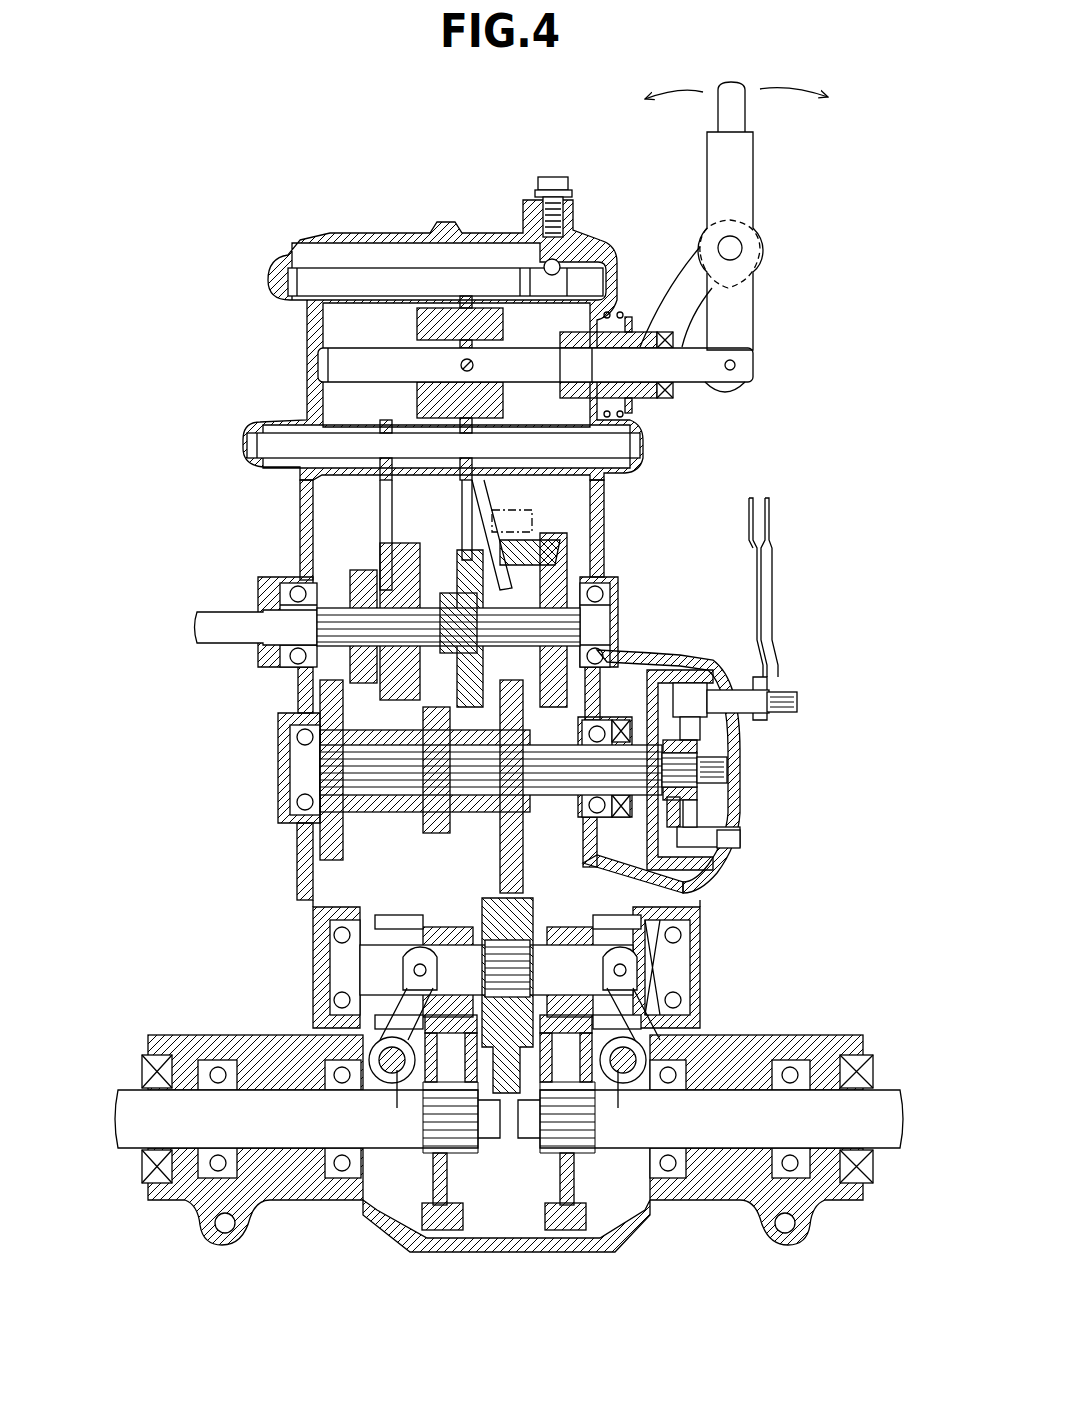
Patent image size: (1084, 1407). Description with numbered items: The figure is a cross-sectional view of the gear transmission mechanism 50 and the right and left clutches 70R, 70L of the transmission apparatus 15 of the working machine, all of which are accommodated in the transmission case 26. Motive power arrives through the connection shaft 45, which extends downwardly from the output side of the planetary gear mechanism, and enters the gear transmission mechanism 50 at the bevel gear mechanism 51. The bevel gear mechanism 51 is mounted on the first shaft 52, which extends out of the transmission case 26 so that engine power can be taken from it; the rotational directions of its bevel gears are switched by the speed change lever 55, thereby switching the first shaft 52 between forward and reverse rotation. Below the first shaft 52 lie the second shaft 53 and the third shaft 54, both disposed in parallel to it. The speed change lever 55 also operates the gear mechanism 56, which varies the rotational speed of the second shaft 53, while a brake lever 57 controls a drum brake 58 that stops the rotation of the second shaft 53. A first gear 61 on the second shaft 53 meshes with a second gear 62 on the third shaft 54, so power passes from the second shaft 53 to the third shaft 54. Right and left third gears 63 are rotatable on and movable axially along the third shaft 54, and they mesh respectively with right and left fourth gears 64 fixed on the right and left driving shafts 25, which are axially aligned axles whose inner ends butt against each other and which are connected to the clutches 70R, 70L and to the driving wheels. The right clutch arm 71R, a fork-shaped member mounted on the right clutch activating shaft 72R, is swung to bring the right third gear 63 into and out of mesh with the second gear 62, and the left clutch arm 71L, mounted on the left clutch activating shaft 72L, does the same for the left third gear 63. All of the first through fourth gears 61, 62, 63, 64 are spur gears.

The transmission apparatus 15 is at (168, 153).
The gear transmission mechanism 50 is at (320, 235).
The transmission case 26 is at (292, 352).
The speed change lever 55 is at (745, 105).
The connection shaft 45 is at (528, 516).
The bevel gear mechanism 51 is at (580, 556).
The brake lever 57 is at (772, 580).
The first shaft 52 is at (225, 630).
The gear mechanism 56 is at (362, 712).
The second shaft 53 is at (290, 762).
The drum brake 58 is at (718, 735).
The first gear 61 is at (710, 830).
The second gear 62 is at (728, 870).
The third gear 63 is at (435, 912).
The right clutch 70R is at (388, 895).
The left clutch 70L is at (700, 965).
The third shaft 54 is at (345, 950).
The right clutch arm 71R is at (430, 968).
The left clutch arm 71L is at (700, 985).
The driving shaft 25 is at (290, 1140).
The right clutch activating shaft 72R is at (400, 1092).
The left clutch activating shaft 72L is at (623, 1092).
The fourth gear 64 is at (445, 1232).